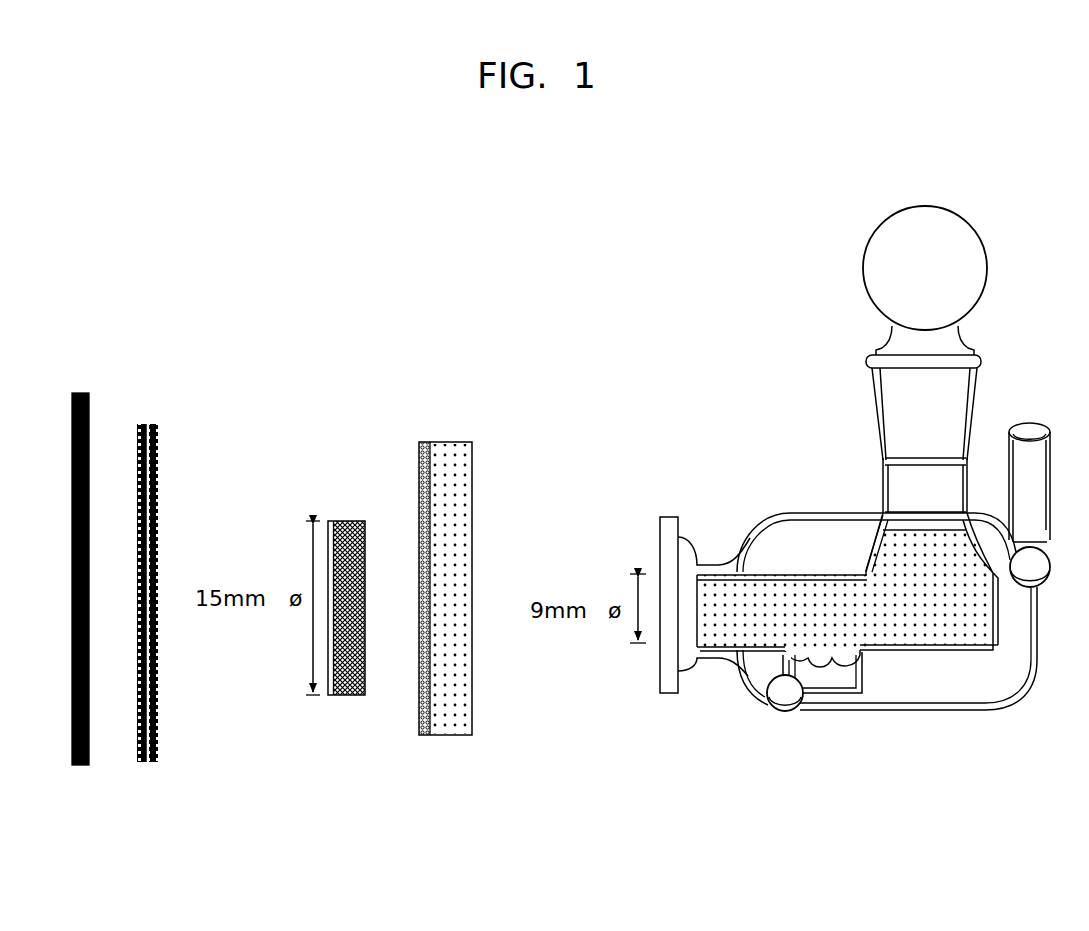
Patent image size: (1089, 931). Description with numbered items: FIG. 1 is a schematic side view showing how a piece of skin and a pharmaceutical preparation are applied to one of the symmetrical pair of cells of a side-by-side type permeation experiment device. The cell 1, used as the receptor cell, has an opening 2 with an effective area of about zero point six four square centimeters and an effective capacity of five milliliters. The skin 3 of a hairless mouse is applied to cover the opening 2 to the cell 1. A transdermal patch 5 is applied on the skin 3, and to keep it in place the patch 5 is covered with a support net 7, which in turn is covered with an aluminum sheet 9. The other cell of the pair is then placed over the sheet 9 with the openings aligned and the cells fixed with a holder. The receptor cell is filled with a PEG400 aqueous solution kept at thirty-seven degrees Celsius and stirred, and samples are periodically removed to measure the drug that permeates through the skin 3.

The cell 1 is at (813, 458).
The opening 2 is at (636, 530).
The skin 3 is at (475, 458).
The transdermal patch 5 is at (348, 517).
The support net 7 is at (148, 767).
The aluminum sheet 9 is at (73, 390).